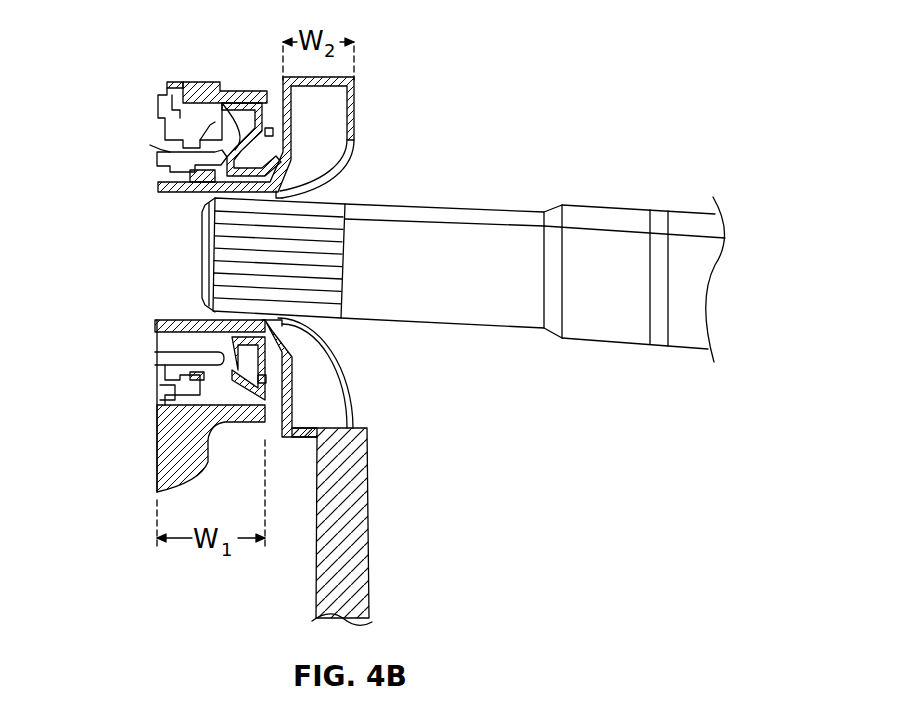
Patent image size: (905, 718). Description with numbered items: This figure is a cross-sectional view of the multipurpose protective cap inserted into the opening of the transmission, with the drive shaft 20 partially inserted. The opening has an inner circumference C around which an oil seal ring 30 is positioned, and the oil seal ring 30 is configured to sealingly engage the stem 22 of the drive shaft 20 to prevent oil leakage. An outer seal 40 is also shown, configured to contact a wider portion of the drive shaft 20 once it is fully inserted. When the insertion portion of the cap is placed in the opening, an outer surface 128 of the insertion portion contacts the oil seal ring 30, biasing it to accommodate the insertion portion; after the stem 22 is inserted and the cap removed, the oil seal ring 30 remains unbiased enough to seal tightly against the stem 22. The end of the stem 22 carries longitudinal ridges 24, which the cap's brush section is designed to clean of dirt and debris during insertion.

The drive shaft 20 is at (693, 210).
The stem 22 is at (412, 260).
The ridges 24 is at (327, 227).
The oil seal ring 30 is at (213, 333).
The outer seal 40 is at (221, 112).
The outer surface 128 is at (170, 164).
The inner circumference C is at (163, 157).